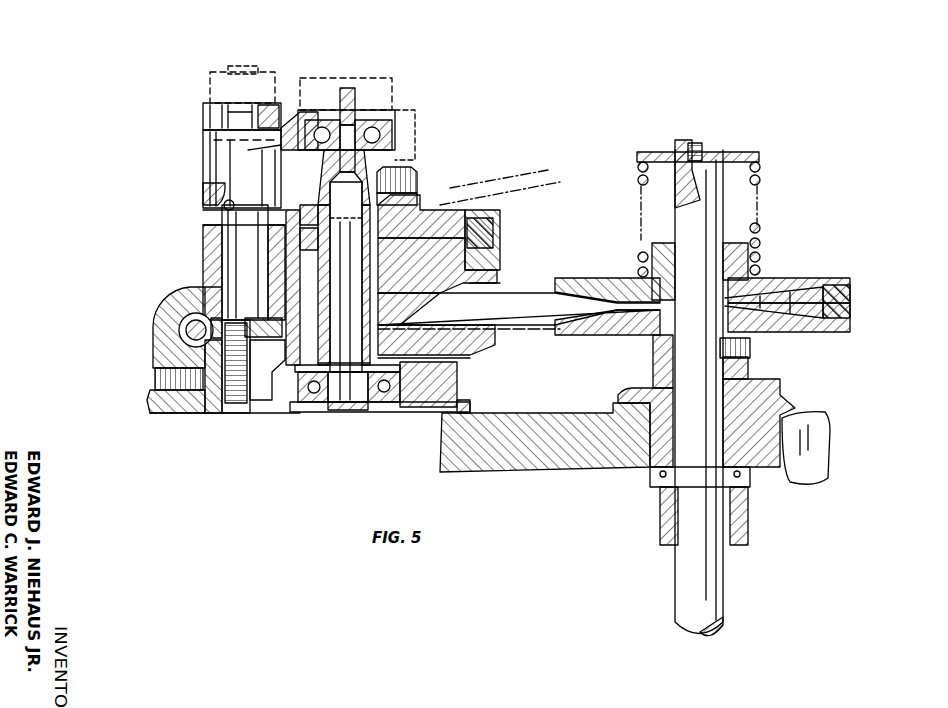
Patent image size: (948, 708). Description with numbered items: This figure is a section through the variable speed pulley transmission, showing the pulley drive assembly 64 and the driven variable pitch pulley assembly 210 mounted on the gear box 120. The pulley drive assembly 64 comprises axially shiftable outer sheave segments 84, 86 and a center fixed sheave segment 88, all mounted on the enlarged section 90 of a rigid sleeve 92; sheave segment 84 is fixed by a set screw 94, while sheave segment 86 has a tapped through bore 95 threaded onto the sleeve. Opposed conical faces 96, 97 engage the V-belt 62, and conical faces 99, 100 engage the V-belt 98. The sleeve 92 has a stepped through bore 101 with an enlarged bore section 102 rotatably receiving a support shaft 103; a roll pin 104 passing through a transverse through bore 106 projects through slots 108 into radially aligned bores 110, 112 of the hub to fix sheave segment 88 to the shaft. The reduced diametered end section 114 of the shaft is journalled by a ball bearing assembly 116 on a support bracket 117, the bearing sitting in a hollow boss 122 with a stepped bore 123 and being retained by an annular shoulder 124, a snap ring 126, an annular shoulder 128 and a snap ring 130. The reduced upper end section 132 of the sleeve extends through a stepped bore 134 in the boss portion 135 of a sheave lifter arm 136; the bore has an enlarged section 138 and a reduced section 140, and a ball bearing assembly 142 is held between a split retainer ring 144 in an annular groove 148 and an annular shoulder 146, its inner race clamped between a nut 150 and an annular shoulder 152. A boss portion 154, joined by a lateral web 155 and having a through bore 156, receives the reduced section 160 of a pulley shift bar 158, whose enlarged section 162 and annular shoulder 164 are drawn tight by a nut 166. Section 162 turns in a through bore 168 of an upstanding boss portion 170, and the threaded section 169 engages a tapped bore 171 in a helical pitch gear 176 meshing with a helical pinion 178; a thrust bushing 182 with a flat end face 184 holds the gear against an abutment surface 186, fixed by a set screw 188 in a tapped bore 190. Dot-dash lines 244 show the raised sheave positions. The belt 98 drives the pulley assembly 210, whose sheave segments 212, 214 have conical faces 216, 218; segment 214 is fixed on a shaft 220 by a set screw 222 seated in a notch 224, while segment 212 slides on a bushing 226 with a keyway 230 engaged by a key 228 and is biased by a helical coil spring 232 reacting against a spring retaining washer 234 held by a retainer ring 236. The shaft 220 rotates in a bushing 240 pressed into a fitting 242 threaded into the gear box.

The V-belt 62 is at (496, 238).
The pulley drive assembly 64 is at (440, 390).
The outer sheave segment 84 is at (500, 212).
The outer sheave segment 86 is at (458, 355).
The center fixed sheave segment 88 is at (494, 268).
The enlarged section of sleeve 90 is at (418, 293).
The sleeve 92 is at (280, 413).
The set screw 94 is at (418, 182).
The tapped through bore 95 is at (330, 355).
The segmental conical face 96 is at (490, 226).
The segmental conical face 97 is at (488, 248).
The V-belt 98 is at (522, 329).
The segmental conical face 99 is at (470, 340).
The segmental conical face 100 is at (465, 325).
The stepped through bore 101 is at (331, 290).
The enlarged bore section 102 is at (344, 354).
The support shaft 103 is at (372, 309).
The roll pin 104 is at (300, 215).
The transverse through bore 106 is at (346, 277).
The slots 108 is at (384, 252).
The radially aligned bore 110 is at (300, 250).
The radially aligned bore 112 is at (392, 222).
The reduced diametered end section 114 is at (335, 410).
The ball bearing assembly 116 is at (408, 413).
The support bracket 117 is at (150, 405).
The gear box 120 is at (553, 449).
The hollow boss 122 is at (440, 375).
The stepped bore 123 is at (348, 391).
The annular shoulder 124 is at (315, 410).
The snap ring 126 is at (392, 410).
The annular shoulder 128 is at (400, 358).
The snap ring 130 is at (372, 410).
The reduced diametered upper end section 132 is at (370, 120).
The cylindrical stepped bore 134 is at (347, 88).
The boss portion 135 is at (305, 125).
The sheave lifter arm 136 is at (300, 112).
The enlarged diametered section 138 is at (362, 118).
The reduced diametered section 140 is at (320, 190).
The ball bearing assembly 142 is at (400, 125).
The split retainer ring 144 is at (318, 175).
The annular shoulder 146 is at (398, 133).
The annular groove 148 is at (385, 122).
The nut 150 is at (376, 130).
The annular shoulder 152 is at (281, 160).
The boss portion 154 is at (203, 170).
The lateral web 155 is at (235, 158).
The smooth walled through bore 156 is at (222, 215).
The pulley shift bar 158 is at (203, 255).
The reduced diametered section 160 is at (203, 195).
The enlarged diametered section 162 is at (215, 268).
The annular shoulder 164 is at (203, 205).
The nut 166 is at (232, 110).
The smooth walled through bore 168 is at (262, 262).
The threaded section 169 is at (236, 413).
The upstanding boss portion 170 is at (178, 320).
The tapped bore 171 is at (240, 320).
The helical pitch gear 176 is at (211, 335).
The helical pinion 178 is at (186, 330).
The thrust bushing 182 is at (214, 413).
The flat end face 184 is at (312, 305).
The abutment surface 186 is at (275, 368).
The set screw 188 is at (180, 390).
The tapped bore 190 is at (165, 390).
The variable pitch pulley assembly 210 is at (824, 271).
The sheave segment 212 is at (825, 277).
The sheave segment 214 is at (828, 330).
The segmental conical face 216 is at (848, 292).
The segmental conical face 218 is at (848, 316).
The shaft 220 is at (718, 592).
The set screw 222 is at (750, 370).
The notch 224 is at (752, 346).
The bushing 226 is at (762, 243).
The key 228 is at (668, 250).
The keyway 230 is at (676, 295).
The helical coil spring 232 is at (762, 180).
The spring retaining washer 234 is at (740, 155).
The retainer ring 236 is at (676, 150).
The bushing 240 is at (676, 432).
The fitting 242 is at (795, 398).
The dot-dash lines 244 is at (507, 181).